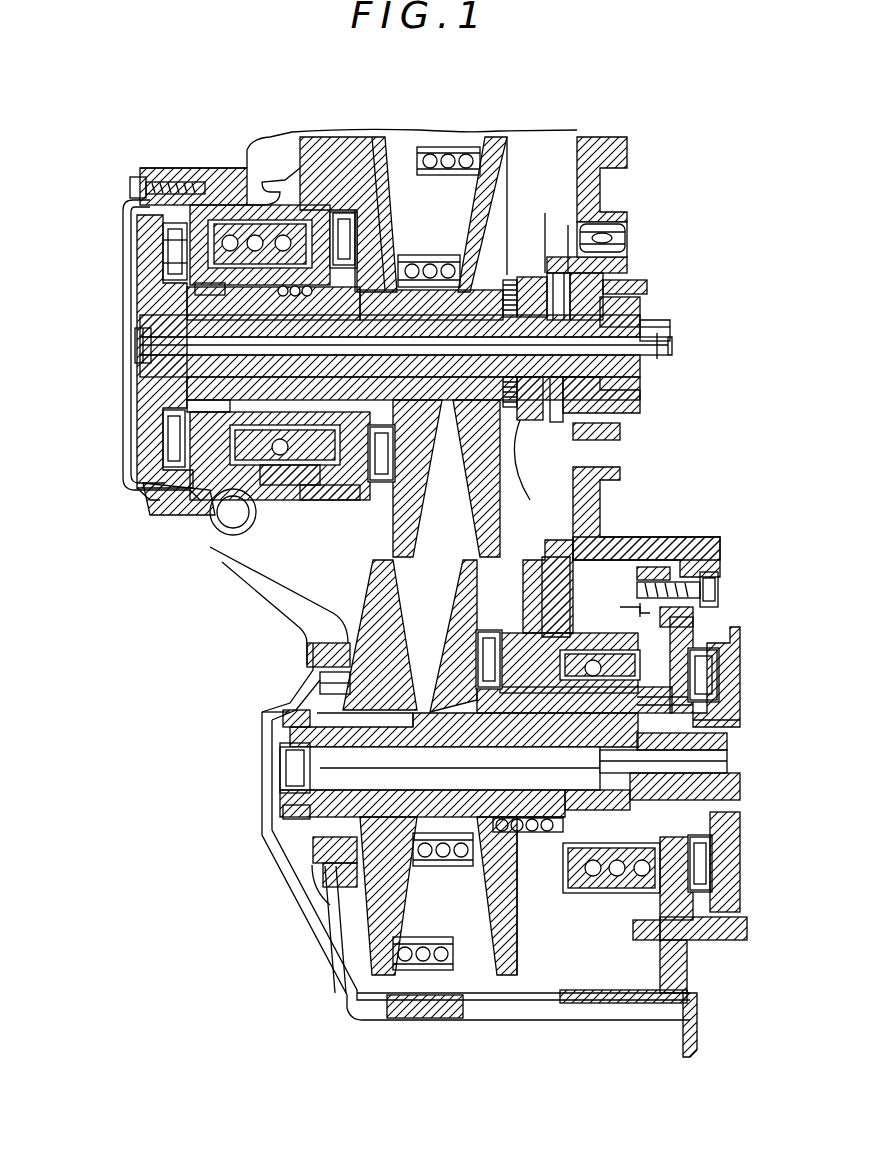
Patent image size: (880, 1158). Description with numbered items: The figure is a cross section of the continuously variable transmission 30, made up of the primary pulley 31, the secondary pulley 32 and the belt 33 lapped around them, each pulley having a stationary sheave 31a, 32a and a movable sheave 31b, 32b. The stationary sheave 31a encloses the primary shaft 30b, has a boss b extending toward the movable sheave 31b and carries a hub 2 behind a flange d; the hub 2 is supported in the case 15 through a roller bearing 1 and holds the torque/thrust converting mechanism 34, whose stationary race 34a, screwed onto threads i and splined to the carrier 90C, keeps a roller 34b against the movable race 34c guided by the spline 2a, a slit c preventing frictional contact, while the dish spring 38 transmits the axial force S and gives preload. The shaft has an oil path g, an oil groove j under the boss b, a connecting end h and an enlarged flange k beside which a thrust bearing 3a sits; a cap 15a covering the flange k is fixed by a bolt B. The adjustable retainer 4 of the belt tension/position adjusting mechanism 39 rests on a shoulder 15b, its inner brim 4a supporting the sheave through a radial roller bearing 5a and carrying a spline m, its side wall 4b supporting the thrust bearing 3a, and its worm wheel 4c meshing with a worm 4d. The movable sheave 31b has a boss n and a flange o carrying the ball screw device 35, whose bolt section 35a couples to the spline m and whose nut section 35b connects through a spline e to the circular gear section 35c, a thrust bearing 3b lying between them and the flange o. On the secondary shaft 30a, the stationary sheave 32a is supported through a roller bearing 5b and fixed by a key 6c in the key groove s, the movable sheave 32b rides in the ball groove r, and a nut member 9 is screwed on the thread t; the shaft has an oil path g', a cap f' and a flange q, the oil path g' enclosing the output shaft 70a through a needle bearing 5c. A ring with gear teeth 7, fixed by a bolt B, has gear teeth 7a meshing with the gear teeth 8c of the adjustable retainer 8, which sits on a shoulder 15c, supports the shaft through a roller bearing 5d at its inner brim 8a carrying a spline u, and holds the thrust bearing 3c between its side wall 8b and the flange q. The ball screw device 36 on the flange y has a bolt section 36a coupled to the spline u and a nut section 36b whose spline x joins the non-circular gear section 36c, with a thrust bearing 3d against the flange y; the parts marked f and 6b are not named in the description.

The continuously variable transmission 30 is at (218, 118).
The belt tension/position adjusting mechanism 39 is at (260, 187).
The ball screw device 35 is at (262, 188).
The bolt B is at (130, 185).
The movable sheave 31b is at (368, 140).
The primary pulley 31 is at (383, 148).
The stationary sheave 31a is at (495, 170).
The thrust bearing 3a is at (165, 243).
The flange k is at (150, 272).
The radial roller bearing 5a is at (200, 283).
The spline e is at (280, 225).
The thrust bearing 3b is at (342, 225).
The flange o is at (375, 195).
The boss n is at (372, 235).
The flange d is at (480, 192).
The torque/thrust converting mechanism 34 is at (545, 272).
The roller 34b is at (525, 262).
The slit c is at (539, 288).
The case 15 is at (600, 193).
The roller bearing 1 is at (612, 232).
The axial force S is at (464, 264).
The spline 2a is at (500, 290).
The carrier 90C is at (627, 292).
The dish spring 38 is at (500, 313).
The primary shaft 30b is at (655, 338).
The shaft nut f is at (115, 345).
The oil path g is at (220, 355).
The boss b is at (350, 357).
The oil groove j is at (440, 355).
The threads i is at (584, 357).
The connecting end h is at (672, 341).
The stationary race 34a is at (648, 402).
The cap 15a is at (125, 427).
The spline m is at (278, 450).
The hub 2 is at (548, 430).
The inner brim 4a is at (185, 440).
The adjustable retainer 4 is at (214, 467).
The side wall 4b is at (165, 482).
The nut section 35b is at (287, 470).
The bolt section 35a is at (320, 482).
The shoulder 15b is at (168, 505).
The worm wheel 4c is at (212, 520).
The worm 4d is at (236, 527).
The circular gear section 35c is at (322, 512).
The movable race 34c is at (532, 412).
The thrust bearing 3d is at (485, 652).
The non-circular gear section 36c is at (560, 620).
The spline x is at (560, 642).
The ring with gear teeth 7 is at (660, 566).
The gear teeth 7a is at (640, 616).
The adjustable retainer 8 is at (662, 637).
The inner brim 8a is at (645, 692).
The gear teeth 8c is at (720, 600).
The side wall 8b is at (720, 660).
The flange q is at (732, 690).
The spline u is at (732, 716).
The roller bearing 5d is at (700, 742).
The output shaft 70a is at (675, 758).
The needle bearing 5c is at (700, 794).
The nut member 9 is at (282, 710).
The secondary shaft 30a is at (272, 735).
The cap f' is at (264, 768).
The key 6c is at (340, 728).
The key groove s is at (375, 728).
The oil path g' is at (460, 770).
The ball groove r is at (472, 820).
The shaft portion 6b is at (530, 818).
The thread t is at (280, 814).
The roller bearing 5b is at (320, 868).
The belt 33 is at (440, 868).
The stationary sheave 32a is at (385, 947).
The secondary pulley 32 is at (478, 952).
The movable sheave 32b is at (515, 947).
The flange y is at (510, 925).
The ball screw device 36 is at (612, 915).
The bolt section 36a is at (578, 930).
The thrust bearing 3c is at (715, 870).
The nut section 36b is at (738, 910).
The shoulder 15c is at (660, 945).